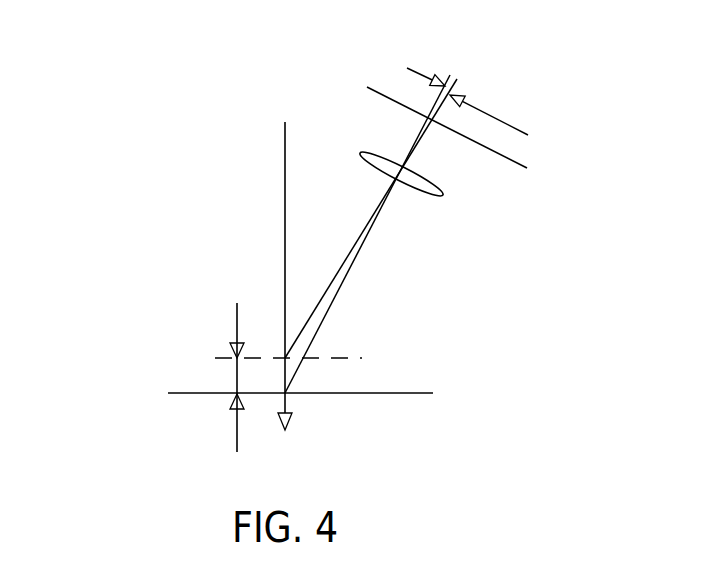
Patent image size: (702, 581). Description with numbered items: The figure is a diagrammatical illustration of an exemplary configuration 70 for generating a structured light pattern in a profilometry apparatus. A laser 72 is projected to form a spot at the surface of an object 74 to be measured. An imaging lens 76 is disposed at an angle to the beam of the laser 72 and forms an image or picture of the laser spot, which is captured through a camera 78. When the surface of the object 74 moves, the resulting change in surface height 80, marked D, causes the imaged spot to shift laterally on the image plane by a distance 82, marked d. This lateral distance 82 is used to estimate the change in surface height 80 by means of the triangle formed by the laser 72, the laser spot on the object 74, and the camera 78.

The configuration 70 is at (173, 56).
The laser 72 is at (284, 143).
The object 74 is at (421, 393).
The imaging lens 76 is at (441, 197).
The camera 78 is at (502, 156).
The change in surface height 80 is at (235, 312).
The distance 82 is at (519, 132).